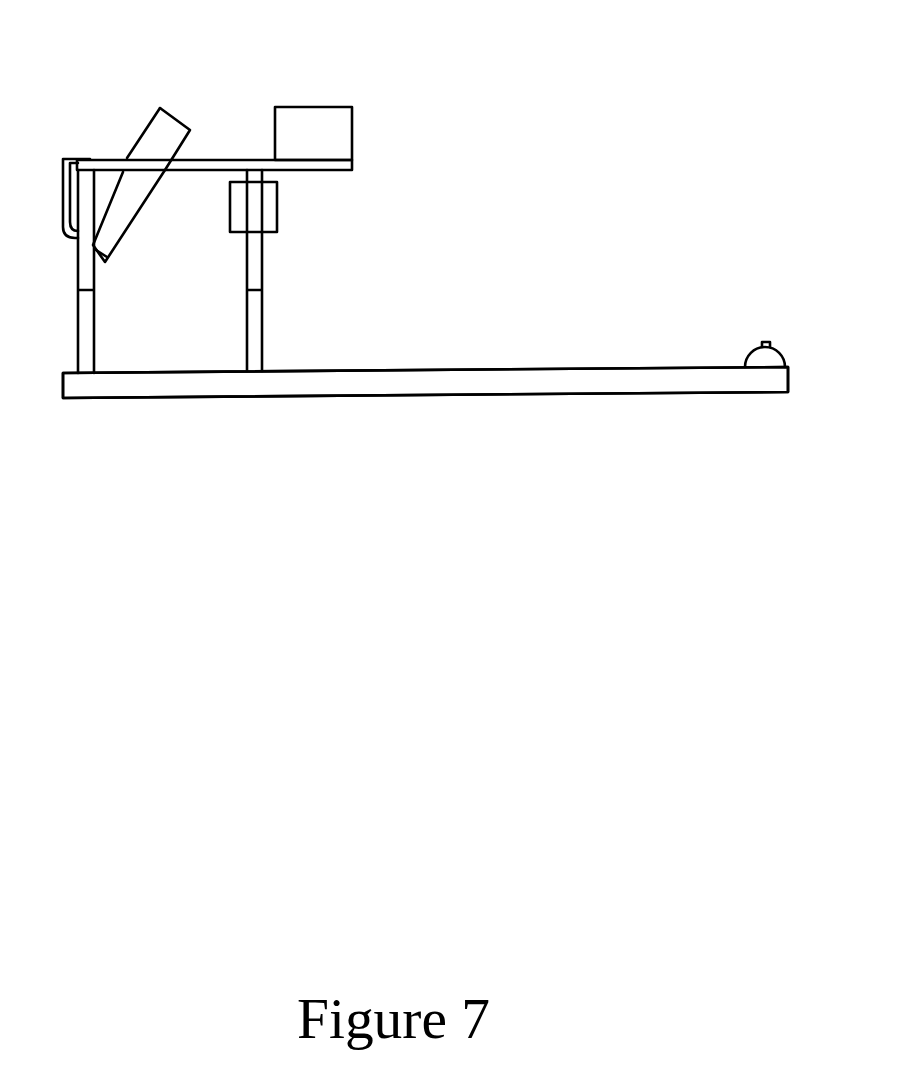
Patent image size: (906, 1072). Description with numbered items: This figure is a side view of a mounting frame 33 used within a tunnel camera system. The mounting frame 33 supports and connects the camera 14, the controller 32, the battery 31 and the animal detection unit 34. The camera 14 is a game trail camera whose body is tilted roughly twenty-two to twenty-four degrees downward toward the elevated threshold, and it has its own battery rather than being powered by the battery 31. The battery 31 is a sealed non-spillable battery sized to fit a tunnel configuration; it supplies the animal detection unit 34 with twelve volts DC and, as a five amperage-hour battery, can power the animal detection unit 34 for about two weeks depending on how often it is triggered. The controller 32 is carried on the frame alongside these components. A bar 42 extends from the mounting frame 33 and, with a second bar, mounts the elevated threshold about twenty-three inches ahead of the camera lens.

The camera 14 is at (127, 147).
The battery 31 is at (353, 120).
The controller 32 is at (278, 215).
The mounting frame 33 is at (167, 398).
The animal detection unit 34 is at (743, 353).
The bar 42 is at (502, 395).